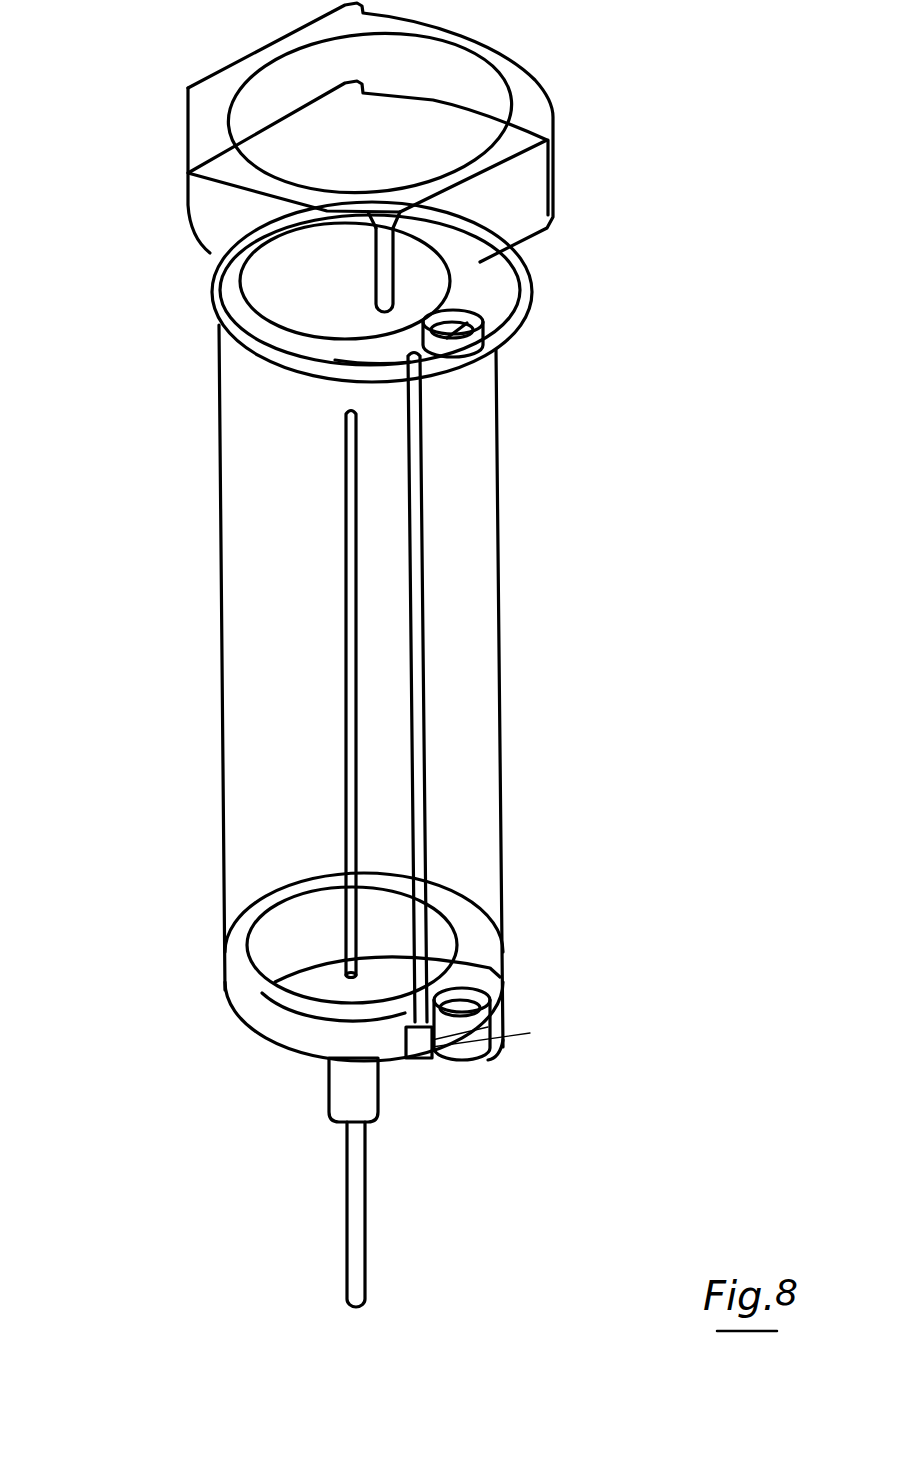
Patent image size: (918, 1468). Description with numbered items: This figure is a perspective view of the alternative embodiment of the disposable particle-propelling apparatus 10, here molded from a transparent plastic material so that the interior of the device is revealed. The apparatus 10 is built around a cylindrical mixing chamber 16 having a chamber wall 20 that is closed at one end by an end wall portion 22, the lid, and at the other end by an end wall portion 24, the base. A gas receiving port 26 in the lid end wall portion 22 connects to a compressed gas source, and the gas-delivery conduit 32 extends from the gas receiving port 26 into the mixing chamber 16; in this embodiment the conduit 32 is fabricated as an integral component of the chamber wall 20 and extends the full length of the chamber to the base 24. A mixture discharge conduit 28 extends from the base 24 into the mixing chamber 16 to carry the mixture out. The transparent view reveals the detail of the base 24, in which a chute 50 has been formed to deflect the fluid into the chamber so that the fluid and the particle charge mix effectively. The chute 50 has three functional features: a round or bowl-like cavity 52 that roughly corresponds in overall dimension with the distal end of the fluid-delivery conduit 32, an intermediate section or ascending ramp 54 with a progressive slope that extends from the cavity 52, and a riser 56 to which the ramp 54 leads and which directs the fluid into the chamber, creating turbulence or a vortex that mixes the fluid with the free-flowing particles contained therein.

The disposable particle-propelling apparatus 10 is at (173, 677).
The cylindrical mixing chamber 16 is at (361, 686).
The chamber wall 20 is at (508, 748).
The end wall portion (lid) 22 is at (370, 132).
The end wall portion (base) 24 is at (255, 1020).
The gas receiving port 26 is at (483, 322).
The mixture discharge conduit 28 is at (345, 500).
The gas-delivery conduit 32 is at (444, 688).
The chute 50 is at (503, 993).
The round or bowl-like cavity 52 is at (475, 1062).
The intermediate section (ascending ramp) 54 is at (239, 1172).
The riser 56 is at (235, 993).